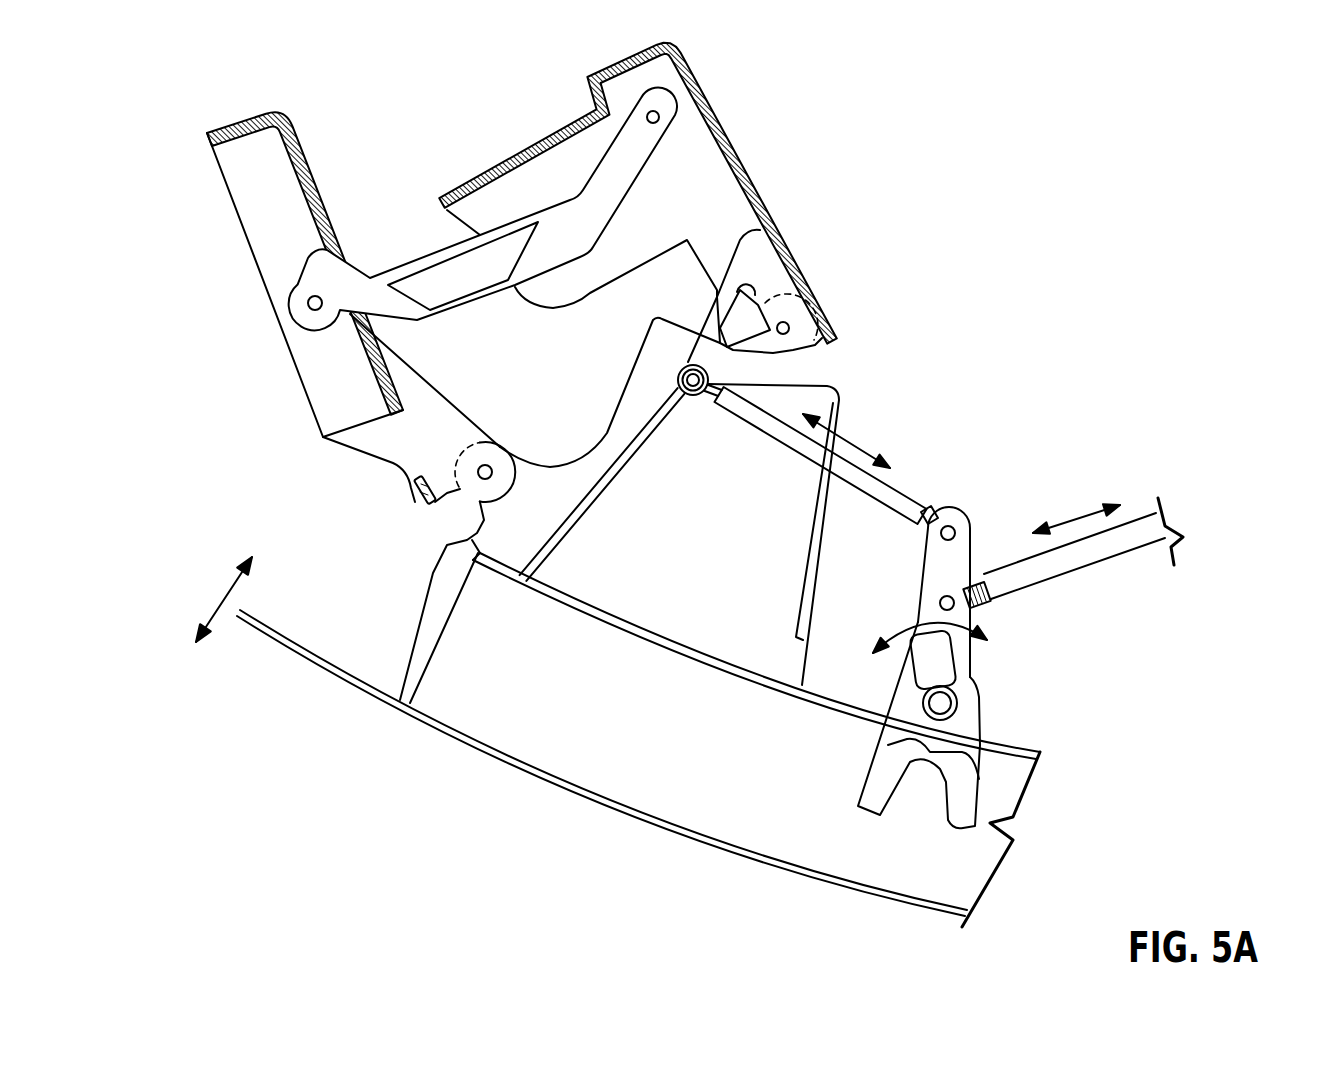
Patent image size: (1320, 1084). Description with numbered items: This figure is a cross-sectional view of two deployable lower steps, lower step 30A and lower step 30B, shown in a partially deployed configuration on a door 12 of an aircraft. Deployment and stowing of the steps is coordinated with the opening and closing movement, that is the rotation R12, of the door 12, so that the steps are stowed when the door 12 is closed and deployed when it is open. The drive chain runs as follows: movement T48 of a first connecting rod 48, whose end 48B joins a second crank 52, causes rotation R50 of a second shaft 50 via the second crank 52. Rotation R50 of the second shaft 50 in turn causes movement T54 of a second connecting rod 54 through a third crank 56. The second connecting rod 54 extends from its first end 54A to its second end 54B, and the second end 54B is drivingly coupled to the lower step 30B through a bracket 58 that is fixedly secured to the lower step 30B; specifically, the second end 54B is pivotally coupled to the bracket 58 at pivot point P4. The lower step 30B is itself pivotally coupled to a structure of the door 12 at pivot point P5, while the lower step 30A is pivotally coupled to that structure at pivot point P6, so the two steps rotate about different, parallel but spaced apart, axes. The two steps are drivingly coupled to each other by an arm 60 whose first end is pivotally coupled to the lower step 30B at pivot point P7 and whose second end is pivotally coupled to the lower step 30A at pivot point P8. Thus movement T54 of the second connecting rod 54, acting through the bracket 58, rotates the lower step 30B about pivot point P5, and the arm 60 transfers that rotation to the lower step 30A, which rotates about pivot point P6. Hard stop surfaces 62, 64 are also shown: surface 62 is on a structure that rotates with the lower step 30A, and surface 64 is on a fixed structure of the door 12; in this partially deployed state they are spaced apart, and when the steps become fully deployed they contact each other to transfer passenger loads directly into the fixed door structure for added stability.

The lower step 30A is at (260, 110).
The lower step 30B is at (740, 150).
The arm 60 is at (440, 248).
The pivot point P7 is at (646, 117).
The pivot point P8 is at (308, 303).
The bracket 58 is at (732, 300).
The pivot point P5 is at (789, 328).
The pivot point P4 is at (680, 374).
The second end 54B is at (686, 396).
The second connecting rod 54 is at (905, 492).
The movement T54 is at (864, 448).
The first end 54A is at (930, 515).
The third crank 56 is at (969, 522).
The end of first connecting rod 48B is at (967, 608).
The first connecting rod 48 is at (1087, 578).
The movement T48 is at (1078, 525).
The second shaft 50 is at (945, 703).
The second crank 52 is at (942, 655).
The rotation R50 is at (897, 643).
The hard stop surface 64 is at (440, 568).
The pivot point P6 is at (479, 477).
The hard stop surface 62 is at (421, 505).
The rotation R12 is at (220, 592).
The door 12 is at (512, 767).